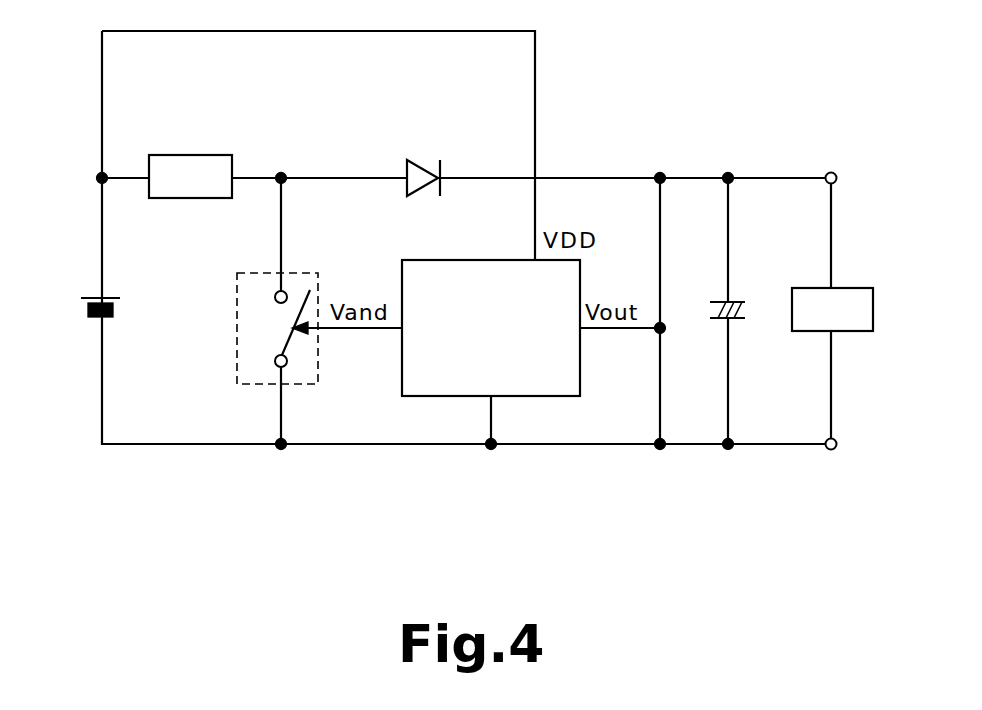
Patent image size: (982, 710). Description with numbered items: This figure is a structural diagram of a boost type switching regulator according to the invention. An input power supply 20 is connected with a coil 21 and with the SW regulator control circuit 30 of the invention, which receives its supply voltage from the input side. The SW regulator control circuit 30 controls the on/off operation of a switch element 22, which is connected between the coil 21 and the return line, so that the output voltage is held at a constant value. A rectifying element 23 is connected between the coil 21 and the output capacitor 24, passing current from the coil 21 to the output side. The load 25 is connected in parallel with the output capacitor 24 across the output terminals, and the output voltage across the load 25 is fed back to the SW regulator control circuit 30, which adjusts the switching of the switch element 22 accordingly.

The input power supply 20 is at (85, 320).
The coil 21 is at (190, 155).
The switch element 22 is at (237, 354).
The rectifying element 23 is at (407, 157).
The output capacitor 24 is at (735, 322).
The load 25 is at (855, 288).
The SW regulator control circuit 30 is at (437, 397).